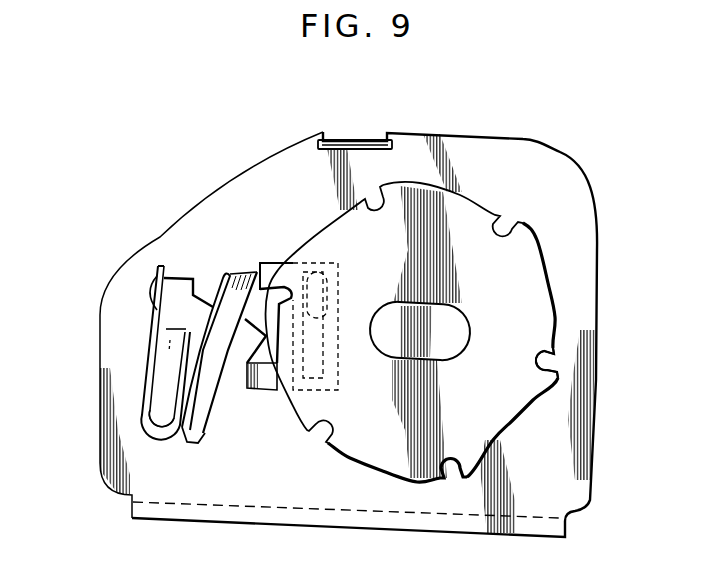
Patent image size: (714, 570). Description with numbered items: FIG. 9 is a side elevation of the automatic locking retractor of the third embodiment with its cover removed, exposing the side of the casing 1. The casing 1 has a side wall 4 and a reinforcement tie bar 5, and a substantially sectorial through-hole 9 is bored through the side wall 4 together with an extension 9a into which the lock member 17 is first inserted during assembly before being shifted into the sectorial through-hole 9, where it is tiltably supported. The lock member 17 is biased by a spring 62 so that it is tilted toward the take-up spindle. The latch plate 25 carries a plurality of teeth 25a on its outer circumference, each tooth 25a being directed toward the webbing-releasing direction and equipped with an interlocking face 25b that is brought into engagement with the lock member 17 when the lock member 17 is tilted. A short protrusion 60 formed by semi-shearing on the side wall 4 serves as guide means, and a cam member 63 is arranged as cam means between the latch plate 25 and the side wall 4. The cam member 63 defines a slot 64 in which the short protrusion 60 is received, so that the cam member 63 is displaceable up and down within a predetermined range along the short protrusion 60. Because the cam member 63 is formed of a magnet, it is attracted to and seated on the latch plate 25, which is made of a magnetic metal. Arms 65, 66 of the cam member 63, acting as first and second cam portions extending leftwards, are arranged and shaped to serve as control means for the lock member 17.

The casing 1 is at (95, 409).
The side wall 4 is at (542, 163).
The reinforcement tie bar 5 is at (352, 132).
The sectorial through-hole 9 is at (226, 390).
The extension of through-hole 9a is at (177, 285).
The lock member 17 is at (177, 420).
The latch plate 25 is at (482, 332).
The tooth 25a is at (545, 387).
The interlocking face 25b is at (547, 370).
The short protrusion 60 is at (313, 270).
The spring 62 is at (160, 327).
The cam member 63 is at (338, 390).
The slot 64 is at (328, 330).
The arm 65 is at (270, 262).
The arm 66 is at (271, 385).